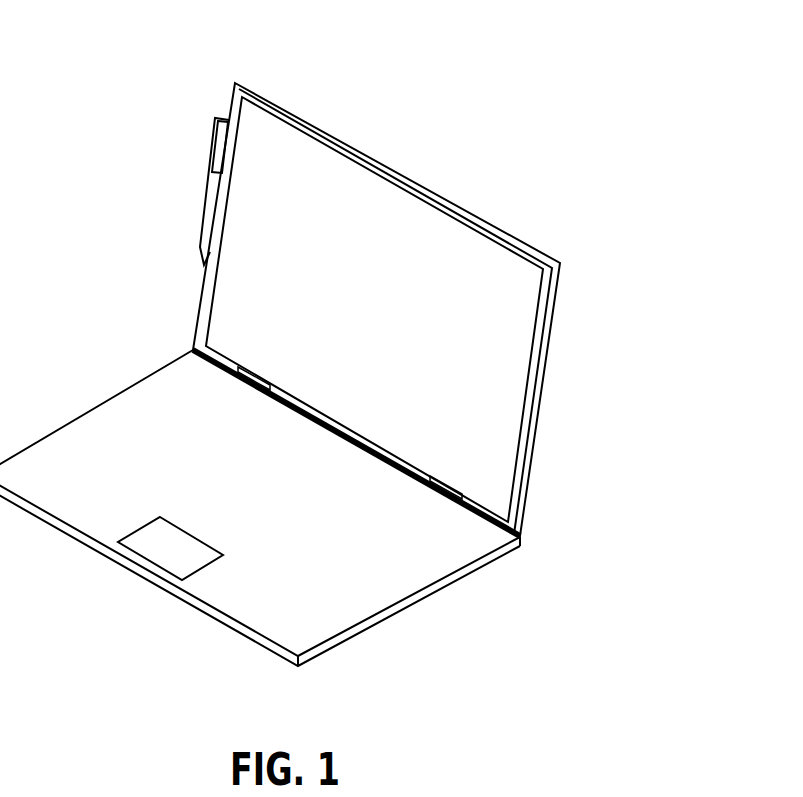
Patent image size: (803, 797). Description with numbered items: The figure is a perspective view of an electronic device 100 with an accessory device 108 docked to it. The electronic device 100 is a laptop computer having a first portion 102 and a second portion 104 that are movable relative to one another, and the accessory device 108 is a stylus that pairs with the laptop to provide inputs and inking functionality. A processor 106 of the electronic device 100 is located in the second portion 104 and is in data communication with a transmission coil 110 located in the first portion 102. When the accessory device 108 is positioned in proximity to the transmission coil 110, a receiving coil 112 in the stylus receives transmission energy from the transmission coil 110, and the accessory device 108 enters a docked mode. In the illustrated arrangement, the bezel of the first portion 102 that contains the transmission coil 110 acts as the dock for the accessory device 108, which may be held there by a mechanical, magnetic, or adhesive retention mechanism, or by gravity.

The electronic device 100 is at (382, 344).
The first portion 102 is at (552, 316).
The second portion 104 is at (428, 596).
The processor 106 is at (333, 607).
The accessory device 108 is at (138, 173).
The transmission coil 110 is at (301, 75).
The receiving coil 112 is at (162, 127).